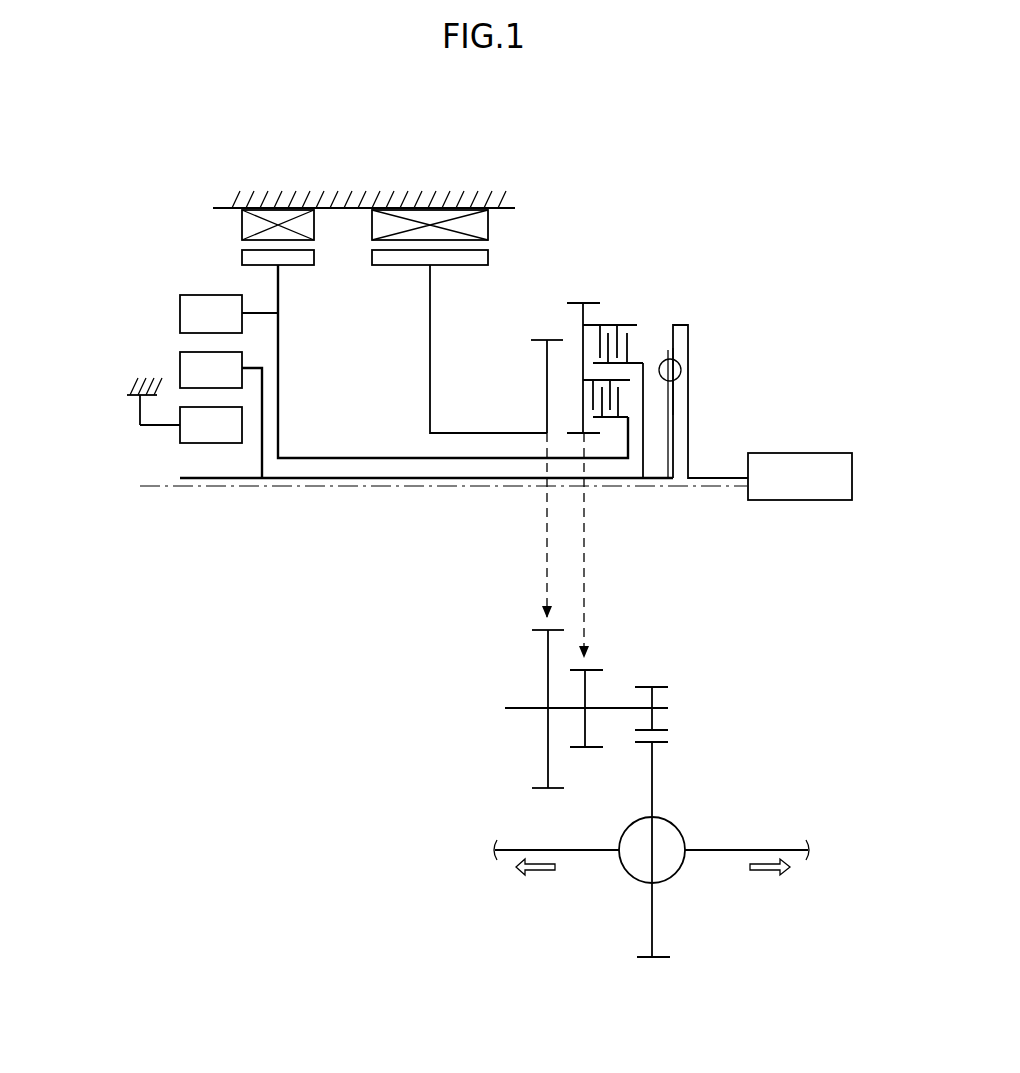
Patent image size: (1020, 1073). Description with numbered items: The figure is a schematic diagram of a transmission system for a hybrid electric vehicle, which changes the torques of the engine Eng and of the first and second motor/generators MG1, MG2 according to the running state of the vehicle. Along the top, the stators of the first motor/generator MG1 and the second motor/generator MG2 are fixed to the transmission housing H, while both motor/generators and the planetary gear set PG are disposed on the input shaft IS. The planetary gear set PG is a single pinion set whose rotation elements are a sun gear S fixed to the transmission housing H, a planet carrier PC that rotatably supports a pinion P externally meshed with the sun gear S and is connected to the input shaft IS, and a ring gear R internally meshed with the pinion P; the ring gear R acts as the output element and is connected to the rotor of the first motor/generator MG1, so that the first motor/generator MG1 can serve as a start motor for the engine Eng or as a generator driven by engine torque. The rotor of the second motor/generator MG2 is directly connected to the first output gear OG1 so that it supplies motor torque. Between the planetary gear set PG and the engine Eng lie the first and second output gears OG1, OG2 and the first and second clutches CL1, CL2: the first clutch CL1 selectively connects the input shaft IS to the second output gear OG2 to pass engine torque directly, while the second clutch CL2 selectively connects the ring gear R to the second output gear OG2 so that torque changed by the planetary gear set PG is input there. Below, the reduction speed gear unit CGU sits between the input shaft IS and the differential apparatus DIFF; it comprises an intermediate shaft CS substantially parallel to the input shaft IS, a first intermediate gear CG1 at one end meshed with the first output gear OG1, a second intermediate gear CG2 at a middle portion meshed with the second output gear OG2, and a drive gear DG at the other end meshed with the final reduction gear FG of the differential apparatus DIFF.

The transmission housing H is at (330, 205).
The first motor/generator MG1 is at (232, 245).
The second motor/generator MG2 is at (500, 243).
The ring gear R is at (229, 314).
The pinion P is at (211, 370).
The sun gear S is at (211, 425).
The planet carrier PC is at (253, 369).
The planetary gear set PG is at (254, 458).
The input shaft IS is at (237, 481).
The first output gear OG1 is at (547, 373).
The second output gear OG2 is at (582, 330).
The first clutch CL1 is at (628, 316).
The second clutch CL2 is at (636, 403).
The engine Eng is at (800, 476).
The reduction speed gear unit CGU is at (550, 708).
The first intermediate gear CG1 is at (547, 660).
The second intermediate gear CG2 is at (588, 692).
The intermediate shaft CS is at (525, 712).
The drive gear DG is at (655, 700).
The final reduction gear FG is at (655, 763).
The differential apparatus DIFF is at (695, 822).